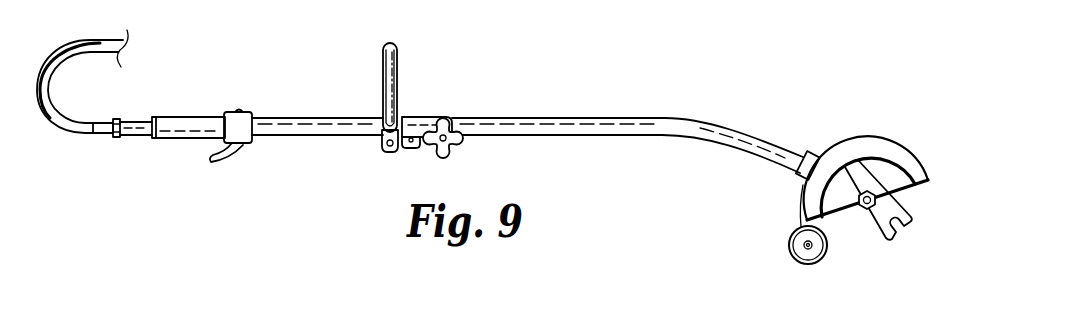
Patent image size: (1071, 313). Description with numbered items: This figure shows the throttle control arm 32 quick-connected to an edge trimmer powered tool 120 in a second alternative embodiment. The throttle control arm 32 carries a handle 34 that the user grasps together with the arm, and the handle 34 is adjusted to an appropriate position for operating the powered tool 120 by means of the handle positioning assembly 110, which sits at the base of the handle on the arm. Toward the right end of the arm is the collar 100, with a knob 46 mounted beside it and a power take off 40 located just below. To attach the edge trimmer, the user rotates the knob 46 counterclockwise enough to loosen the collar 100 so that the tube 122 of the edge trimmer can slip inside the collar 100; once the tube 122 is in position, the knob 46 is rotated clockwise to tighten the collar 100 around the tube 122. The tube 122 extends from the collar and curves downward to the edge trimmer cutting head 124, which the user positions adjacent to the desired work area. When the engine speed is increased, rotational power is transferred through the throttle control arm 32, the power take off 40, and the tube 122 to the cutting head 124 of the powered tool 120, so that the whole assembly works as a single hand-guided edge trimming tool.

The throttle control arm 32 is at (277, 136).
The handle 34 is at (390, 45).
The collar 100 is at (420, 115).
The tube 122 is at (480, 117).
The handle positioning assembly 110 is at (387, 153).
The power take off 40 is at (422, 137).
The knob 46 is at (459, 151).
The edge trimmer powered tool 120 is at (812, 150).
The edge trimmer cutting head 124 is at (866, 191).